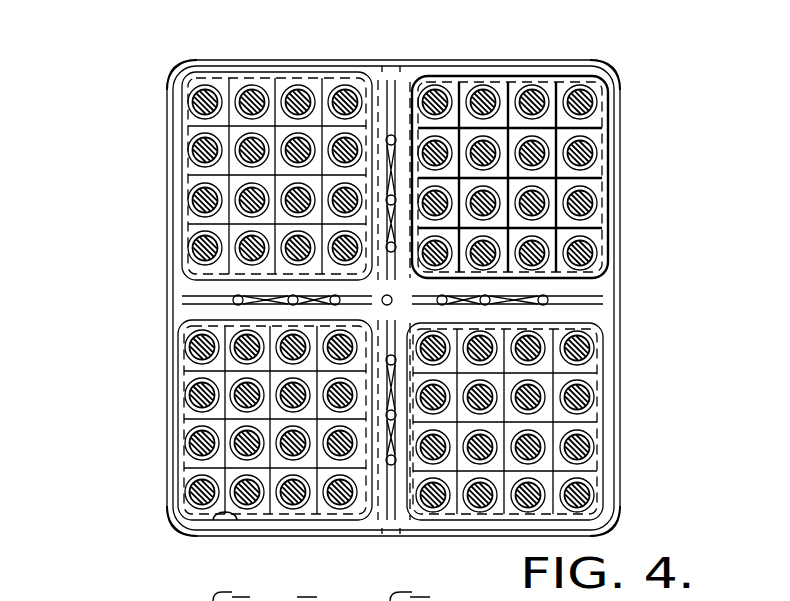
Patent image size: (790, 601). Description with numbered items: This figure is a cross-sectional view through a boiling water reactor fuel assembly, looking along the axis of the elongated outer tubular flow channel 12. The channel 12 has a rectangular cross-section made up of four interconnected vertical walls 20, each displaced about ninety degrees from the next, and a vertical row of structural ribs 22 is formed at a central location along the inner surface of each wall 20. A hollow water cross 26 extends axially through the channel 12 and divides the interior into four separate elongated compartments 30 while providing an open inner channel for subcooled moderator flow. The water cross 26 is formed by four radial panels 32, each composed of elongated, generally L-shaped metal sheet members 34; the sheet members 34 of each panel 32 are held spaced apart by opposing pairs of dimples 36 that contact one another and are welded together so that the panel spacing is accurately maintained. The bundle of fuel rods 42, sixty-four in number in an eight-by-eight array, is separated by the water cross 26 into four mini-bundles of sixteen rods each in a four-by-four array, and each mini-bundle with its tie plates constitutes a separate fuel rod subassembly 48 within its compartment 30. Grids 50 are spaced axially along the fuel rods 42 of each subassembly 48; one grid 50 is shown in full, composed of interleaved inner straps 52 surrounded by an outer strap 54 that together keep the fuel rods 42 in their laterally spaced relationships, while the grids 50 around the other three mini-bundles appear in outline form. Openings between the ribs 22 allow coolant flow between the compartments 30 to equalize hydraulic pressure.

The outer tubular flow channel 12 is at (618, 437).
The vertical walls 20 is at (168, 115).
The structural ribs 22 is at (165, 293).
The water cross 26 is at (313, 507).
The compartments 30 is at (176, 152).
The radial panels 32 is at (205, 330).
The sheet members 34 is at (387, 305).
The dimples 36 is at (238, 218).
The fuel rods 42 is at (200, 92).
The fuel rod subassembly 48 is at (176, 228).
The grids 50 is at (210, 85).
The inner straps 52 is at (592, 233).
The outer strap 54 is at (550, 78).